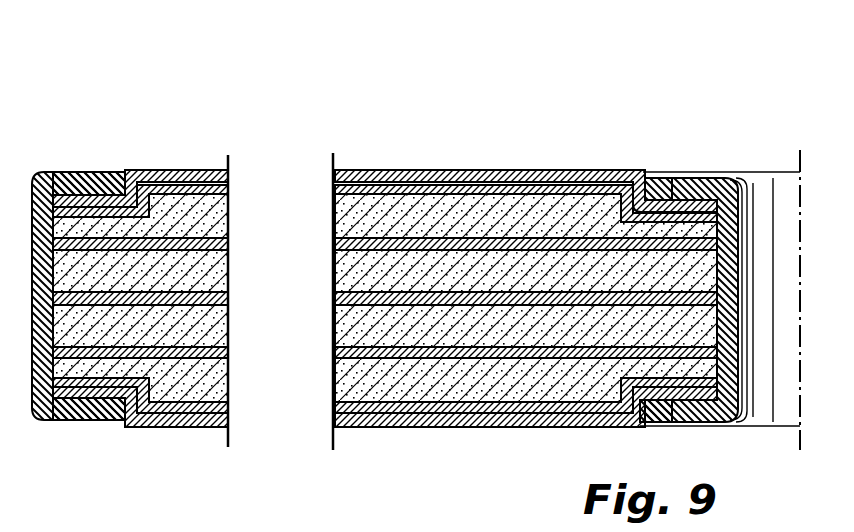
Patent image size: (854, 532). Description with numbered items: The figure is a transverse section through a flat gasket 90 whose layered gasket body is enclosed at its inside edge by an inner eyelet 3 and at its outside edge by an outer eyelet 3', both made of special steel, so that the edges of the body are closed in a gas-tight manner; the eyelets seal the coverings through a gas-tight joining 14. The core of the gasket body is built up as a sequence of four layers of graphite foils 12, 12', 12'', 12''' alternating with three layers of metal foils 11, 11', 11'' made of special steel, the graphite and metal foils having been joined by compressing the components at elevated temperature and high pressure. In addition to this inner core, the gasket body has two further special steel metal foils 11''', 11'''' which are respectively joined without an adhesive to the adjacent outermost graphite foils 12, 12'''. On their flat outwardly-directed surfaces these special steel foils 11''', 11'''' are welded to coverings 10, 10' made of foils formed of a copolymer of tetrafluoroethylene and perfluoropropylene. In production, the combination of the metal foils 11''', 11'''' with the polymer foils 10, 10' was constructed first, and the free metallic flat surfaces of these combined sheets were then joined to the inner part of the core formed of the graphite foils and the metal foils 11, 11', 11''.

The flat gasket 90 is at (158, 92).
The outer eyelet 3' is at (78, 259).
The inner eyelet 3 is at (689, 263).
The gas-tight joining 14 is at (105, 190).
The covering 10 is at (385, 158).
The covering 10' is at (385, 440).
The metal foil 11''' is at (385, 190).
The graphite foil 12 is at (385, 213).
The metal foil 11 is at (385, 234).
The graphite foil 12' is at (385, 271).
The metal foil 11' is at (385, 298).
The graphite foil 12'' is at (385, 326).
The metal foil 11'' is at (385, 361).
The graphite foil 12''' is at (385, 382).
The metal foil 11'''' is at (385, 409).